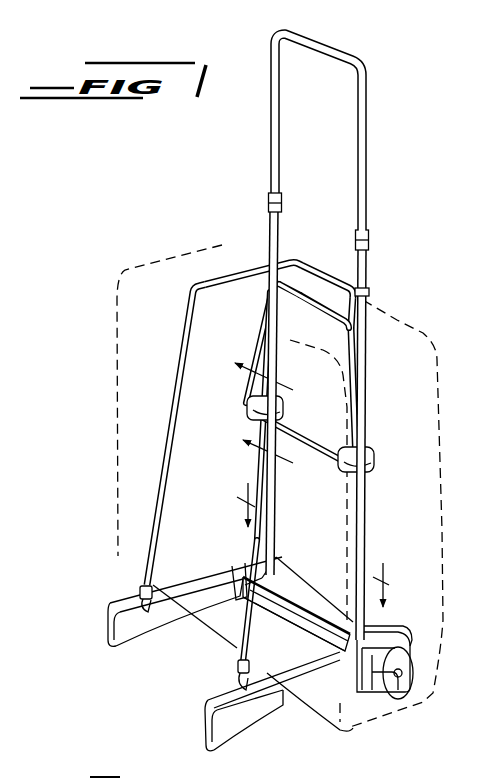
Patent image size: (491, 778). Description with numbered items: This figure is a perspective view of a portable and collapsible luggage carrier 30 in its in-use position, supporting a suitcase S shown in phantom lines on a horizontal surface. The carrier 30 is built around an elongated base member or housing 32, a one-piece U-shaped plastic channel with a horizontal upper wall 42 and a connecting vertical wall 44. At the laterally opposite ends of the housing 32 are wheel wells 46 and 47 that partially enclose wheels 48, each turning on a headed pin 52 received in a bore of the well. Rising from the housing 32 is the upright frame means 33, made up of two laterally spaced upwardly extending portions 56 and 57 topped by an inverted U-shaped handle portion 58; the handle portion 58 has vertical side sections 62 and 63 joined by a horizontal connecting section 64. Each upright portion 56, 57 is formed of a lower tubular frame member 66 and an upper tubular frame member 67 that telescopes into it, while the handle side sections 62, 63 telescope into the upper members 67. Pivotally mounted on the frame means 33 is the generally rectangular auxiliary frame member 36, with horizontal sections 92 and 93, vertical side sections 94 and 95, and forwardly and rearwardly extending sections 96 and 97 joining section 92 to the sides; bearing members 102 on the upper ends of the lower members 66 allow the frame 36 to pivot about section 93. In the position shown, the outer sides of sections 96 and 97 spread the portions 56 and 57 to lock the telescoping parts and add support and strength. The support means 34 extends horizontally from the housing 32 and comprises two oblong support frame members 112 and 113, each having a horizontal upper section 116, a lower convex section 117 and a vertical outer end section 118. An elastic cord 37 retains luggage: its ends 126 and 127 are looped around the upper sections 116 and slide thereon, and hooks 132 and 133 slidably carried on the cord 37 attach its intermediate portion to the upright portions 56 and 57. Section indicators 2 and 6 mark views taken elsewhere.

The portable and collapsible luggage carrier 30 is at (259, 393).
The base member or housing 32 is at (320, 585).
The upright frame means 33 is at (260, 213).
The support means 34 is at (253, 717).
The auxiliary frame member 36 is at (269, 400).
The elastic cord 37 is at (162, 443).
The upper wall 42 is at (305, 625).
The vertically extending wall 44 is at (307, 632).
The wheel well 46 is at (283, 550).
The wheel well 47 is at (400, 653).
The wheel 48 is at (280, 563).
The headed pin 52 is at (437, 653).
The upwardly extending portion 56 is at (370, 395).
The upwardly extending portion 57 is at (265, 260).
The handle portion 58 is at (320, 129).
The side section 62 is at (365, 147).
The side section 63 is at (273, 107).
The connecting section 64 is at (330, 50).
The lower tubular frame member 66 is at (273, 495).
The upper tubular frame member 67 is at (273, 307).
The horizontally extending section 92 is at (281, 320).
The horizontally extending section 93 is at (300, 433).
The side section 94 is at (358, 430).
The side section 95 is at (257, 385).
The forwardly and rearwardly extending section 96 is at (364, 302).
The forwardly and rearwardly extending section 97 is at (272, 284).
The bearing member 102 is at (288, 410).
The support frame member 112 is at (218, 695).
The support frame member 113 is at (107, 602).
The upper section 116 is at (200, 580).
The lower convex section 117 is at (147, 620).
The outer end section 118 is at (107, 625).
The cord end 126 is at (240, 687).
The cord end 127 is at (140, 597).
The hook 132 is at (368, 292).
The hook 133 is at (283, 262).
The section line 2- 2 is at (312, 539).
The view direction 6 is at (265, 425).
The suitcase S is at (195, 249).